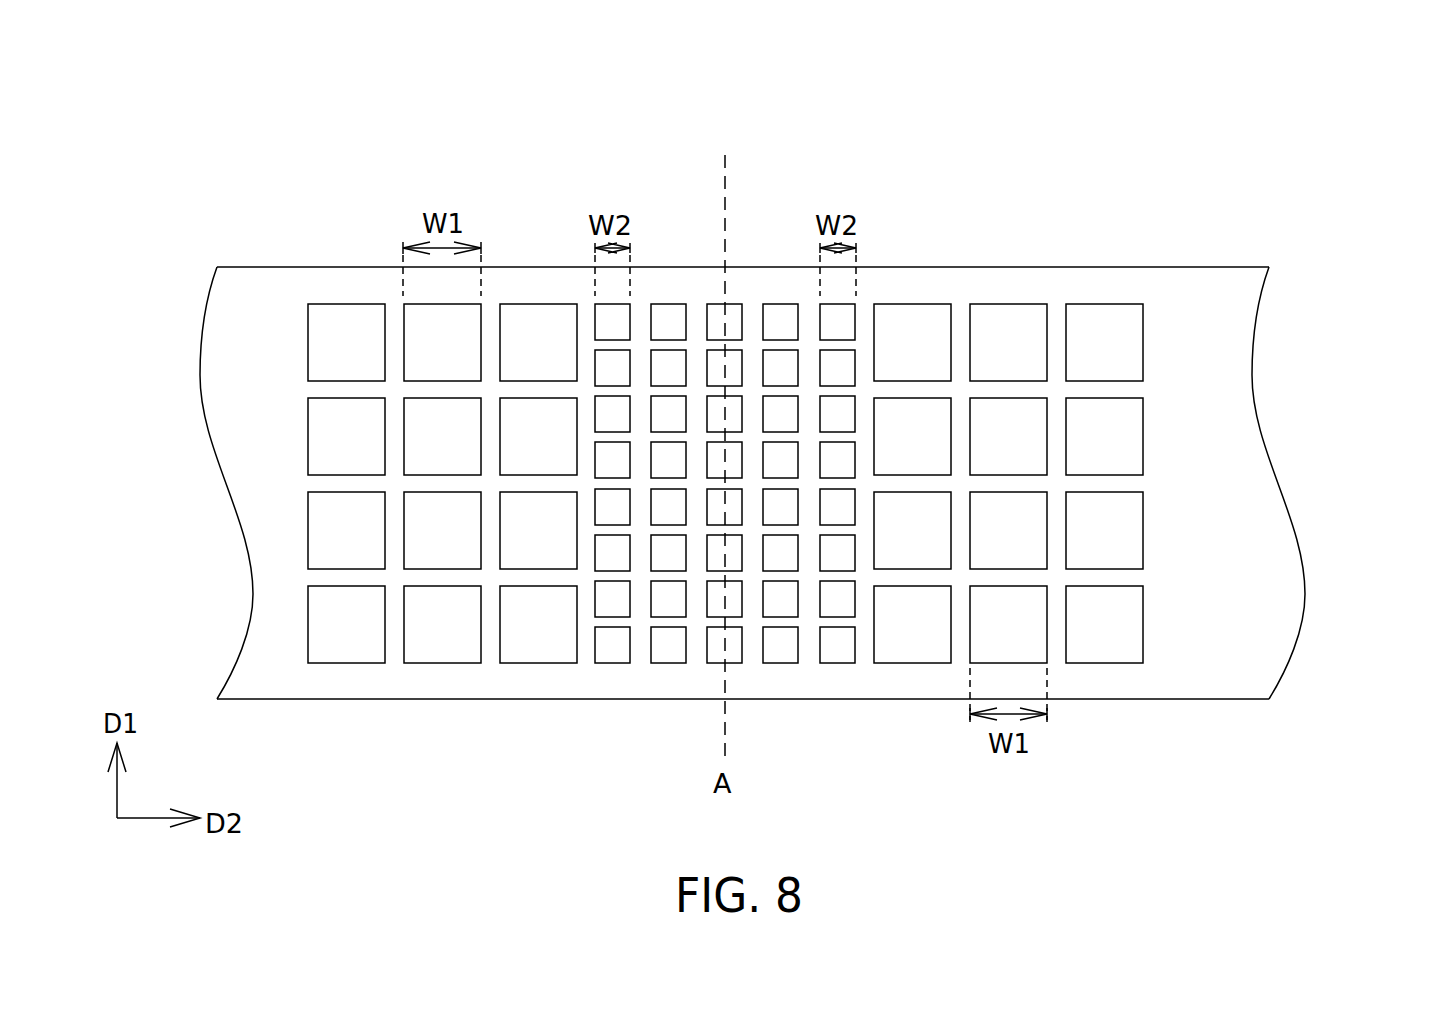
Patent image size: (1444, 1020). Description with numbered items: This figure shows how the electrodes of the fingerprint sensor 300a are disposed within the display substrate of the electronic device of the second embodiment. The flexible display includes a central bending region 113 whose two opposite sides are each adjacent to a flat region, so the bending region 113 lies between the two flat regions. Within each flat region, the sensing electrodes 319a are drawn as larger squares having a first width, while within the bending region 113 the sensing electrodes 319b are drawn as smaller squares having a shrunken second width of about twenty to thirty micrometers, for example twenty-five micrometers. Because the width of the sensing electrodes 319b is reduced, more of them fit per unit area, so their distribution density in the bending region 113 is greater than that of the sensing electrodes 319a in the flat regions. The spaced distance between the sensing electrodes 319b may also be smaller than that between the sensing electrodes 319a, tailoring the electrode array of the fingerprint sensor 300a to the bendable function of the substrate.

The fingerprint sensor 300a is at (1219, 133).
The bending region 113 is at (856, 136).
The sensing electrodes 319a is at (918, 322).
The sensing electrodes 319b is at (668, 322).